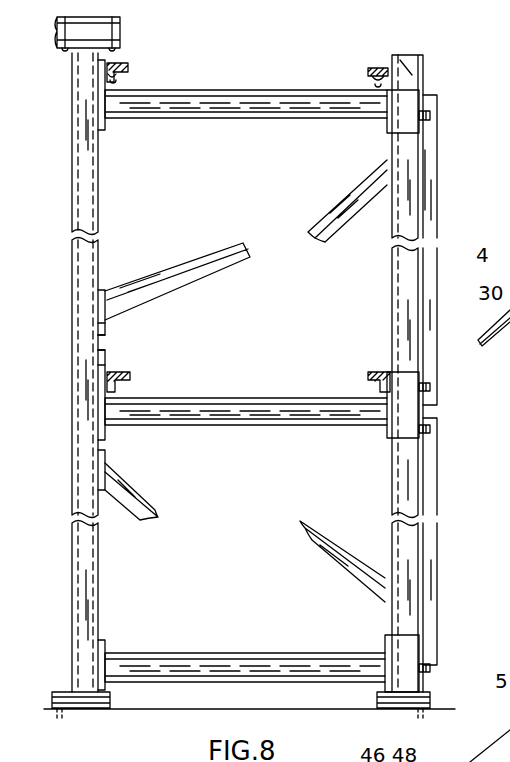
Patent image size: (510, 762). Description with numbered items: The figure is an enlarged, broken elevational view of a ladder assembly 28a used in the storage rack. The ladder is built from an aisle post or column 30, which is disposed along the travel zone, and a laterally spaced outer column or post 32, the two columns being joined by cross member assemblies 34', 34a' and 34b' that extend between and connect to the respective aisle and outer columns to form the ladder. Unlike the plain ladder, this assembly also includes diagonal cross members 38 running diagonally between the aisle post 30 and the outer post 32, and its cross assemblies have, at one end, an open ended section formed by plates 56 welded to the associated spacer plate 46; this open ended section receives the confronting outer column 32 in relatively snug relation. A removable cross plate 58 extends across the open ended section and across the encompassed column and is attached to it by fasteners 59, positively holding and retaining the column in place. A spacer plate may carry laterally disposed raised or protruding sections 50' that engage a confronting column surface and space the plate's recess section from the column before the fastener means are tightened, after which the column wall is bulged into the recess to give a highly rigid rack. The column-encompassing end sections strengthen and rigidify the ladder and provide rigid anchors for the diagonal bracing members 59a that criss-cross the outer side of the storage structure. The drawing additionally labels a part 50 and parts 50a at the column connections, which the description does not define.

The ladder assembly 28a is at (414, 72).
The aisle post or column 30 is at (80, 490).
The outer column or post 32 is at (424, 496).
The cross member assembly 34' is at (246, 83).
The cross member assembly 34a' is at (246, 392).
The cross member assembly 34b' is at (245, 635).
The diagonal cross member 38 is at (144, 288).
The spacer plate 46 is at (103, 290).
The top cap and clip 50 is at (111, 50).
The protruding sections 50' is at (132, 342).
The column connector plates 50a is at (108, 128).
The plates 56 is at (406, 102).
The cross plate 58 is at (437, 130).
The fasteners 59 is at (430, 116).
The diagonal bracing members 59a is at (437, 204).